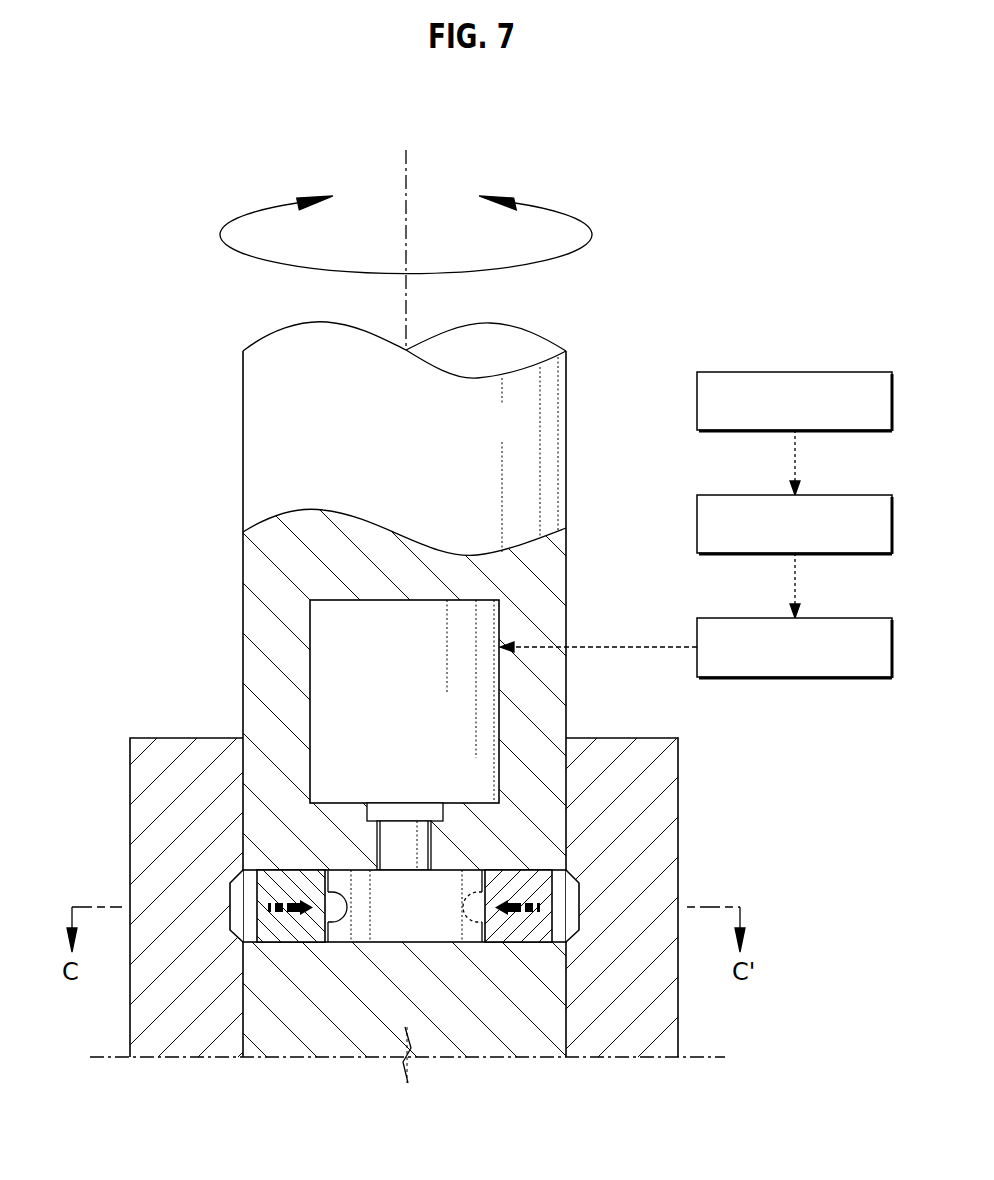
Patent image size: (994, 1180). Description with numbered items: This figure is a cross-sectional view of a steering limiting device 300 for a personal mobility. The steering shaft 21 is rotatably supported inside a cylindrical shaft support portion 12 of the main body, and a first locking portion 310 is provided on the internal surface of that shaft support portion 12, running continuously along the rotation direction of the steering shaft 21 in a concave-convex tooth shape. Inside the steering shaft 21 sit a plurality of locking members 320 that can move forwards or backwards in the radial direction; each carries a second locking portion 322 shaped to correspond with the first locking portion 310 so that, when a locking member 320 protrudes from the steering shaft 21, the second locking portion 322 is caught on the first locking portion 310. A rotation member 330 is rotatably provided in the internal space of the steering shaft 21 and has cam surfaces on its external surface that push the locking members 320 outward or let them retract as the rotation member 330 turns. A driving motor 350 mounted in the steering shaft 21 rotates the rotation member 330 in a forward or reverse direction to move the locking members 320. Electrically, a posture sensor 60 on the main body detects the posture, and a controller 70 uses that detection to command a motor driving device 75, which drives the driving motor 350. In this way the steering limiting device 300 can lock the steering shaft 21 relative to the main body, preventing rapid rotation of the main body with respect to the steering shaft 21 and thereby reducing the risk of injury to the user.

The cylindrical shaft support portion 12 is at (663, 773).
The steering shaft 21 is at (260, 398).
The posture sensor 60 is at (860, 372).
The controller 70 is at (860, 495).
The motor driving device 75 is at (860, 618).
The steering limiting device 300 is at (262, 758).
The first locking portion 310 is at (232, 887).
The locking member 320 is at (290, 927).
The second locking portion 322 is at (245, 872).
The rotation member 330 is at (398, 942).
The driving motor 350 is at (355, 620).